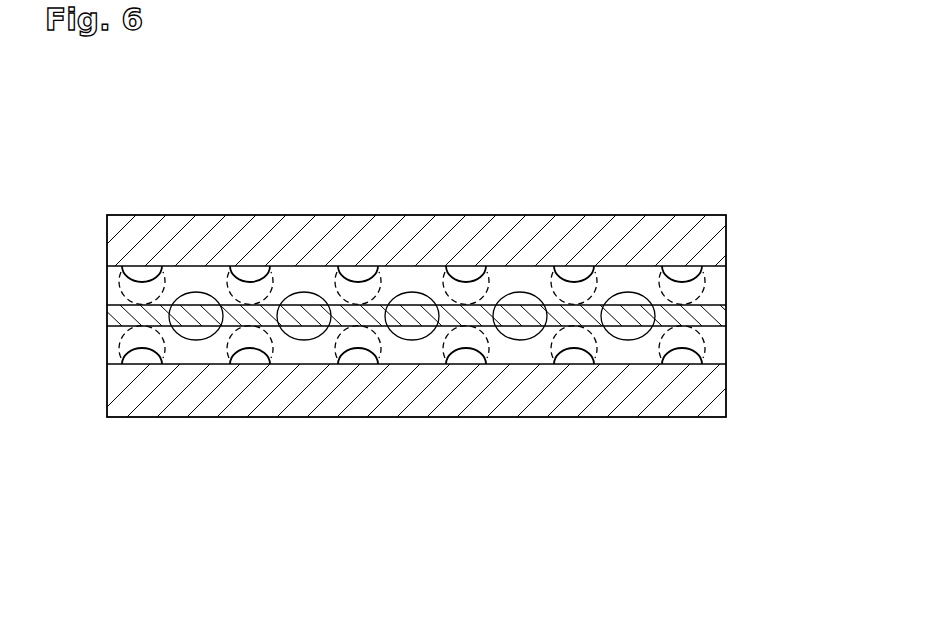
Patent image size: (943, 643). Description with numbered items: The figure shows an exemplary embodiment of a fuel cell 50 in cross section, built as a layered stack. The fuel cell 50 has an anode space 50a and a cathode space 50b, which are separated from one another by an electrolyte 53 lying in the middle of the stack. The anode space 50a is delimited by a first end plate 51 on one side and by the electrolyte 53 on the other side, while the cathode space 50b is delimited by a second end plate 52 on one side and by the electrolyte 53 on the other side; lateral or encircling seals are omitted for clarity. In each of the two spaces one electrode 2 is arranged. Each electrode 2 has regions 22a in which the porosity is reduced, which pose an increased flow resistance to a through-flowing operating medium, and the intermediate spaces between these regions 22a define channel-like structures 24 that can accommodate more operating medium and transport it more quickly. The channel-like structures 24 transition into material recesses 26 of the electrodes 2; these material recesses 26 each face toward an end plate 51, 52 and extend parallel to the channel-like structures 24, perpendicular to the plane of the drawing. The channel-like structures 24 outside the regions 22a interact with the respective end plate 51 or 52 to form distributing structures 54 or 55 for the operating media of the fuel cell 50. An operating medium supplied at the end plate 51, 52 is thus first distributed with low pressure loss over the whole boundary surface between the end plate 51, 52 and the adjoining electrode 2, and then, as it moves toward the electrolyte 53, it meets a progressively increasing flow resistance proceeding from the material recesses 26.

The fuel cell 50 is at (86, 187).
The anode space 50a is at (107, 268).
The cathode space 50b is at (107, 328).
The first end plate 51 is at (727, 241).
The second end plate 52 is at (727, 392).
The electrolyte 53 is at (727, 313).
The electrode 2 is at (727, 281).
The channel-like structures 24 is at (708, 368).
The regions with reduced porosity 22a is at (627, 475).
The material recesses 26 is at (137, 272).
The distributing structure 54 is at (682, 132).
The distributing structure 55 is at (682, 498).